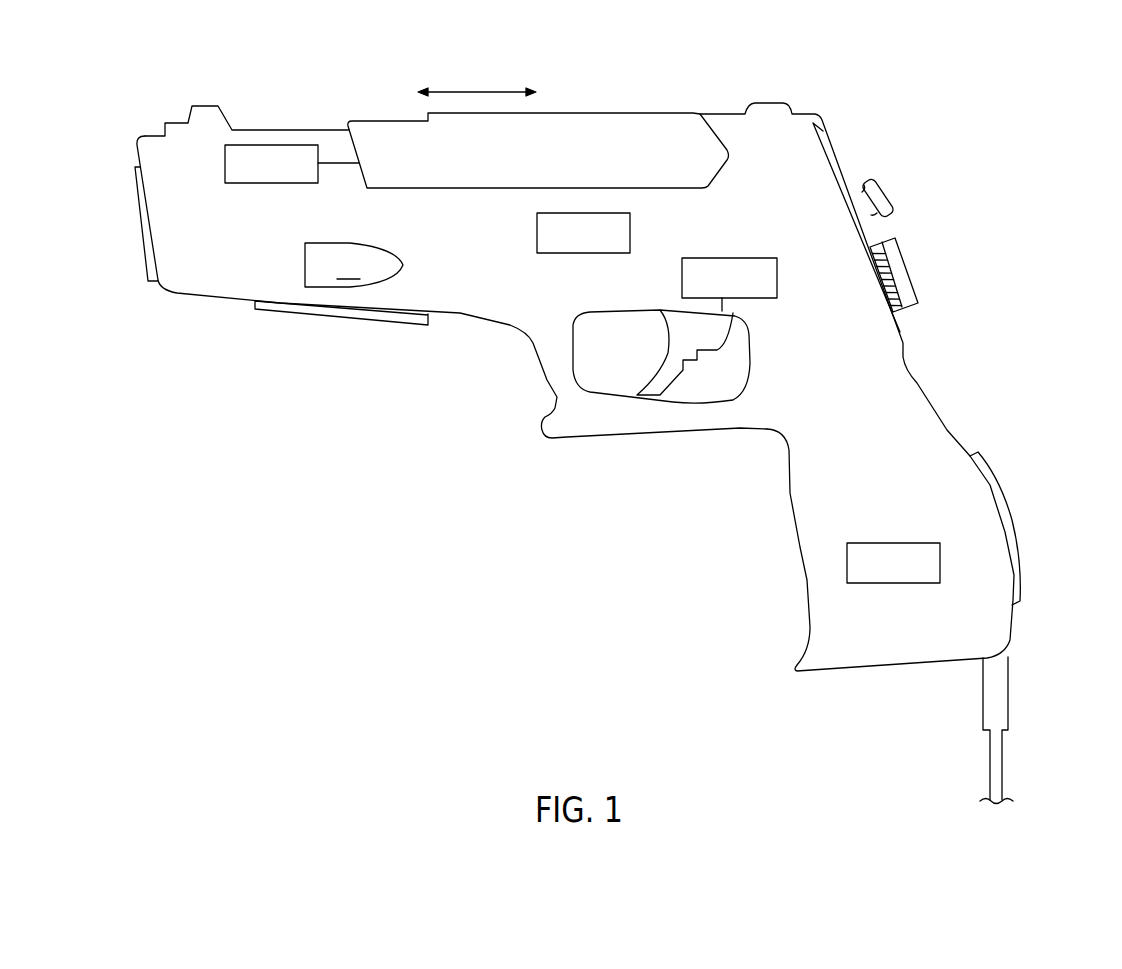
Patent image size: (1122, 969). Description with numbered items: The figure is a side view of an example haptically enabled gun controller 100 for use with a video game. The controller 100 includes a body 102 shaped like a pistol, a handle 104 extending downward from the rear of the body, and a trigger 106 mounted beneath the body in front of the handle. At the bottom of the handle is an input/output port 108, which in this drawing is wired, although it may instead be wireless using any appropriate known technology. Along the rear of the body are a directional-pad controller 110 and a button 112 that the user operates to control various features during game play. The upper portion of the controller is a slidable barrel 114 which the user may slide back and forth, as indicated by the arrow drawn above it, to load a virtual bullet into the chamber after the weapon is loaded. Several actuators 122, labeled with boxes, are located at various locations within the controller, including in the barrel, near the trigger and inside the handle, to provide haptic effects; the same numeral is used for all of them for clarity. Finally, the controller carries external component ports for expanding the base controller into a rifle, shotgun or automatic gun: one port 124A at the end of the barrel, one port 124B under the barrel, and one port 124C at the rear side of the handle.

The controller 100 is at (985, 105).
The body 102 is at (463, 305).
The handle 104 is at (947, 448).
The trigger 106 is at (663, 377).
The input/output port 108 is at (993, 700).
The directional-pad controller 110 is at (885, 197).
The button 112 is at (900, 272).
The slidable barrel 114 is at (603, 130).
The actuator 122 is at (272, 184).
The external component port at the end of the barrel 124A is at (153, 265).
The external component port under the barrel 124B is at (292, 313).
The external component port at the rear side of the handle 124C is at (1012, 532).